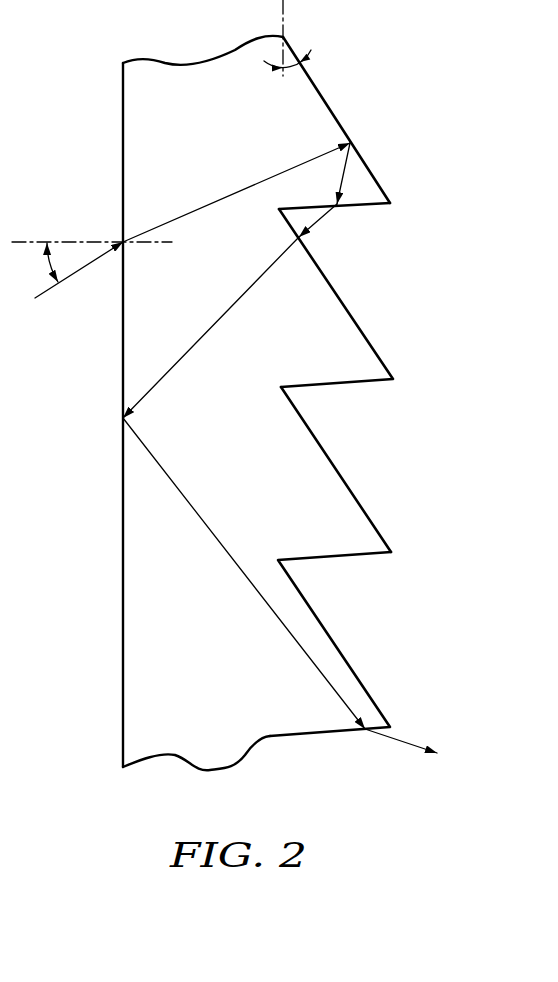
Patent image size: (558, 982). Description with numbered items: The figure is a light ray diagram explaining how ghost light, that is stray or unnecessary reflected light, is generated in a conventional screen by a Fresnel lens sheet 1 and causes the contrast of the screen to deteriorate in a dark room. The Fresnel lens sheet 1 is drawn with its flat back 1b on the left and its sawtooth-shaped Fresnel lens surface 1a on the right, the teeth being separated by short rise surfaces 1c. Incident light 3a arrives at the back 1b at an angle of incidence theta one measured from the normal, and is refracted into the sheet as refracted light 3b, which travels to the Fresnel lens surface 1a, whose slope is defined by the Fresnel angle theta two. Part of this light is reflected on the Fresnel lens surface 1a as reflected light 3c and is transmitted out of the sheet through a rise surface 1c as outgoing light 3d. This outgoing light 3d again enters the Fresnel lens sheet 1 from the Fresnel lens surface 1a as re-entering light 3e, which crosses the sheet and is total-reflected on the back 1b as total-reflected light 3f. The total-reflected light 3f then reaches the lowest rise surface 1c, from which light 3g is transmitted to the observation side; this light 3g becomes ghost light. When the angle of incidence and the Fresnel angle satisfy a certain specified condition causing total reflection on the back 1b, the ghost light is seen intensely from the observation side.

The Fresnel lens sheet 1 is at (284, 37).
The Fresnel lens surface 1a is at (345, 479).
The back of the Fresnel lens sheet 1b is at (122, 679).
The rise surface 1c is at (359, 208).
The incident light 3a is at (50, 290).
The refracted light 3b is at (216, 202).
The reflected light 3c is at (344, 177).
The outgoing light 3d is at (319, 223).
The re-entering light 3e is at (210, 332).
The total-reflected light 3f is at (207, 524).
The ghost light 3g is at (395, 741).